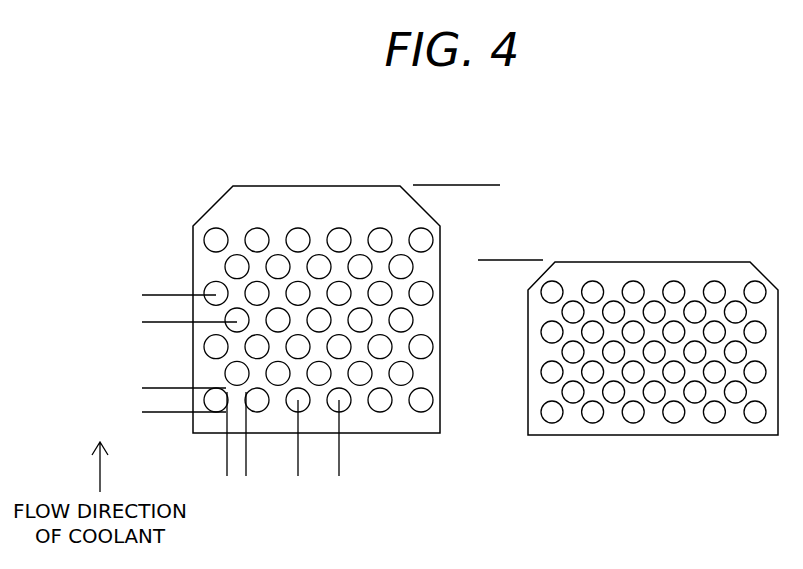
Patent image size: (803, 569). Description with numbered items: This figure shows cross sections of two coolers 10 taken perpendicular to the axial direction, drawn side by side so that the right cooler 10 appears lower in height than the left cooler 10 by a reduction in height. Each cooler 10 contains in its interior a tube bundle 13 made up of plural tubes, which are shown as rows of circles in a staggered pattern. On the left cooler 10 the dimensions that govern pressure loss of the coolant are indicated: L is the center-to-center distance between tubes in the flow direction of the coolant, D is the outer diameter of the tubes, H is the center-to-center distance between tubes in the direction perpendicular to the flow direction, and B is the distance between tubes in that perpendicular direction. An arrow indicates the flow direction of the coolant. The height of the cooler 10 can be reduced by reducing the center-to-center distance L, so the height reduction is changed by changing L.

The cooler 10 is at (289, 197).
The tube bundle 13 is at (380, 400).
The center-to-center distance between tubes in the flow direction of the coolant L is at (149, 296).
The outer diameter of the tubes D is at (149, 389).
The distance between tubes in the direction perpendicular to the flow direction of t B is at (233, 467).
The center-to-center distance between tubes in the direction perpendicular to the fl H is at (339, 471).